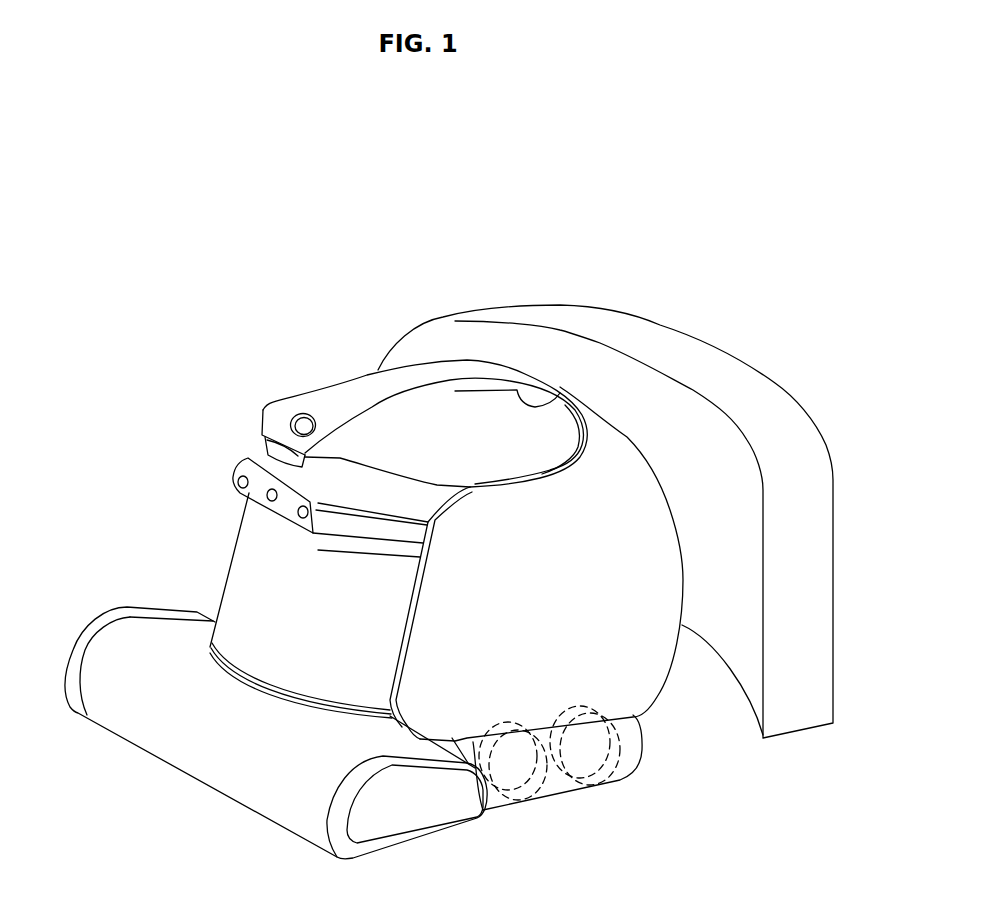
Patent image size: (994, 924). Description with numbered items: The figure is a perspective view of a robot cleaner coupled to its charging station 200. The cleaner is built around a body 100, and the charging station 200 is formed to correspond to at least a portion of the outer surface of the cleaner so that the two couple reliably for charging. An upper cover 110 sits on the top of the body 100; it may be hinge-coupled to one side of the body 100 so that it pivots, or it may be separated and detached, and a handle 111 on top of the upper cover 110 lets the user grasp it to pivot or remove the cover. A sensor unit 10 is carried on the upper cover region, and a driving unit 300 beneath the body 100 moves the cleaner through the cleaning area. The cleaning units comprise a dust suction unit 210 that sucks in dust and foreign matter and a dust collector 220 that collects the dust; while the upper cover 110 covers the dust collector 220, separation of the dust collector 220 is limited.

The sensor unit 10 is at (305, 412).
The body 100 is at (628, 523).
The upper cover 110 is at (517, 423).
The handle 111 is at (432, 372).
The charging station 200 is at (730, 370).
The dust suction unit 210 is at (150, 717).
The dust collector 220 is at (247, 560).
The driving unit 300 is at (520, 783).